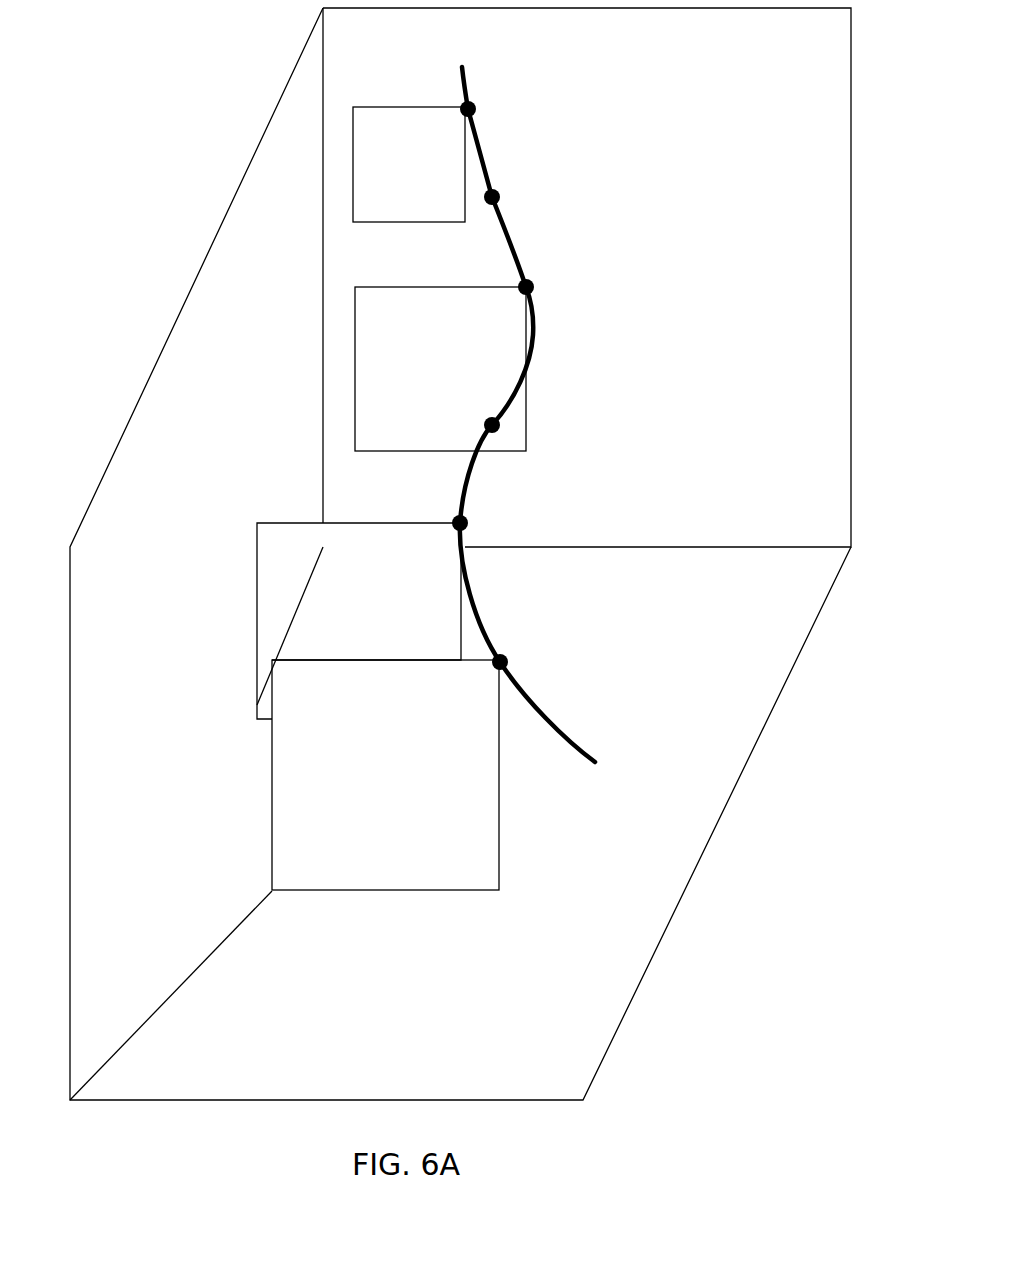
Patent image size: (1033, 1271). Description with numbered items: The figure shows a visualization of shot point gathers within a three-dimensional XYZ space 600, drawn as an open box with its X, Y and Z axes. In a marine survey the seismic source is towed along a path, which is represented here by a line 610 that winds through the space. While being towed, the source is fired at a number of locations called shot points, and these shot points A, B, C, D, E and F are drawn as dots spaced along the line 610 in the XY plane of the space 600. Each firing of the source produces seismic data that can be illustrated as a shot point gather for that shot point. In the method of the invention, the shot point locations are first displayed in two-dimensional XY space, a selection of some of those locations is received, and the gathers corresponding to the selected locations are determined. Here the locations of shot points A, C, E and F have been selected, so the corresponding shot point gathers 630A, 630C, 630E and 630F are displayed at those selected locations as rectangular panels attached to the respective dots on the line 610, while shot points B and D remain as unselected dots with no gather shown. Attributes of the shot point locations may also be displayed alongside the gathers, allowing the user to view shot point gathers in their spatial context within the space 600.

The 3-D XYZ space 600 is at (100, 24).
The line 610 is at (580, 753).
The shot point gather 630A is at (409, 164).
The shot point gather 630C is at (440, 369).
The shot point gather 630E is at (359, 621).
The shot point gather 630F is at (385, 775).
The shot point A is at (473, 102).
The shot point B is at (497, 190).
The shot point C is at (531, 280).
The shot point D is at (499, 416).
The shot point E is at (467, 512).
The shot point F is at (507, 652).